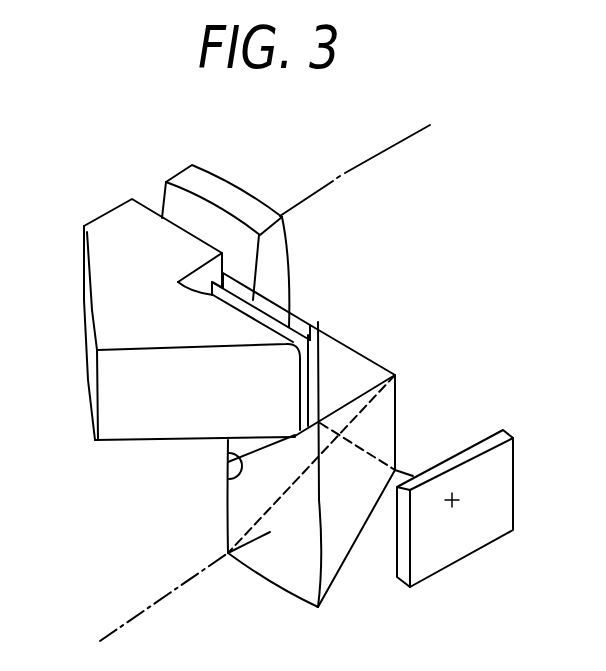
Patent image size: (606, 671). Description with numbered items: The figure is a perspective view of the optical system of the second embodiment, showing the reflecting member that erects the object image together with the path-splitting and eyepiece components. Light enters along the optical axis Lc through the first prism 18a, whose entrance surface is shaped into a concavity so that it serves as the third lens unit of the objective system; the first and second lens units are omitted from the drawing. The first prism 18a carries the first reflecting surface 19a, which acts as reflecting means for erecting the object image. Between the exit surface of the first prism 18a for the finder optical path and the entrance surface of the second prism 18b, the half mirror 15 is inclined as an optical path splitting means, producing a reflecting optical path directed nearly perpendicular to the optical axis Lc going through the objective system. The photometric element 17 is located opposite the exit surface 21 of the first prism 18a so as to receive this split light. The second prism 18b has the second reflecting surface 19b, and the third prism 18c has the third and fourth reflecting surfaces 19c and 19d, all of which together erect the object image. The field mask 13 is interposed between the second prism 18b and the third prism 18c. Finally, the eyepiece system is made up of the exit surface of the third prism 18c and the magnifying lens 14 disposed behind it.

The field mask 13 is at (318, 322).
The magnifying lens 14 is at (207, 187).
The half mirror 15 is at (228, 463).
The photometric element 17 is at (517, 490).
The first prism 18a is at (290, 590).
The second prism 18b is at (378, 360).
The third prism 18c is at (103, 213).
The first reflecting surface 19a is at (371, 545).
The second reflecting surface 19b is at (360, 340).
The third reflecting surface 19c is at (140, 407).
The fourth reflecting surface 19d is at (90, 322).
The exit surface of the first prism 21 is at (382, 432).
The optical axis Lc is at (250, 389).